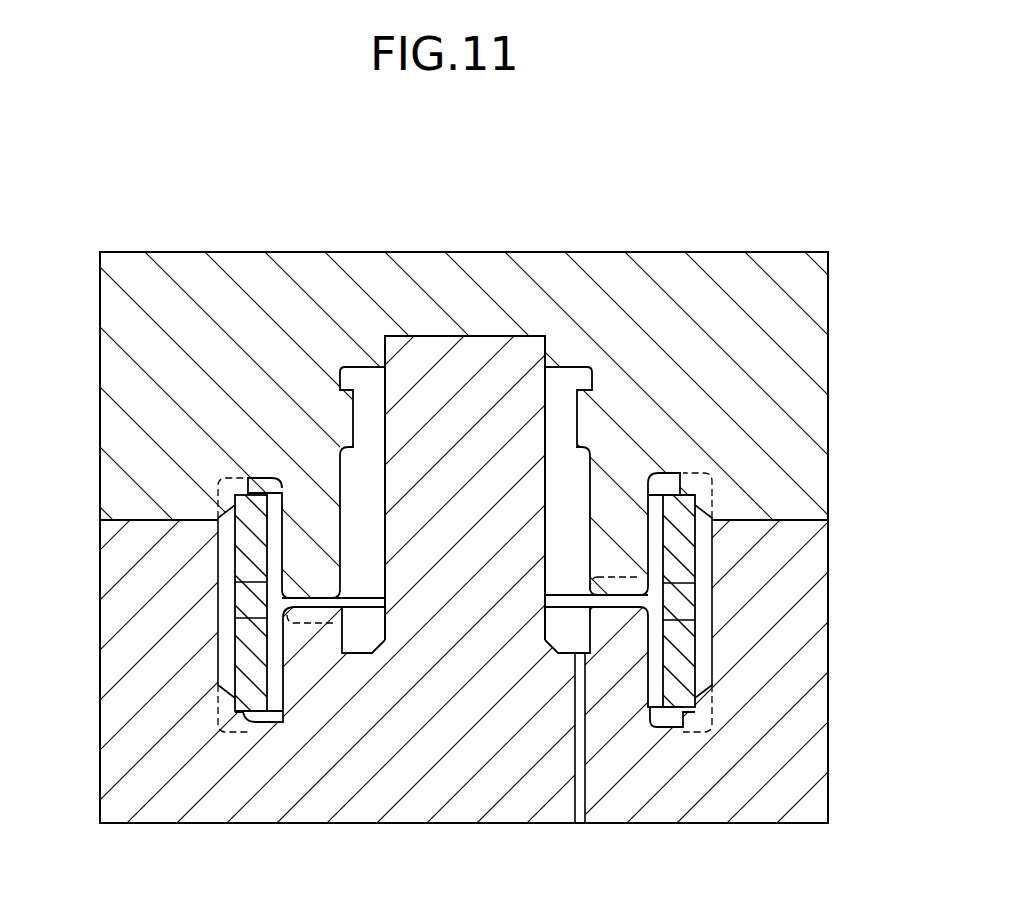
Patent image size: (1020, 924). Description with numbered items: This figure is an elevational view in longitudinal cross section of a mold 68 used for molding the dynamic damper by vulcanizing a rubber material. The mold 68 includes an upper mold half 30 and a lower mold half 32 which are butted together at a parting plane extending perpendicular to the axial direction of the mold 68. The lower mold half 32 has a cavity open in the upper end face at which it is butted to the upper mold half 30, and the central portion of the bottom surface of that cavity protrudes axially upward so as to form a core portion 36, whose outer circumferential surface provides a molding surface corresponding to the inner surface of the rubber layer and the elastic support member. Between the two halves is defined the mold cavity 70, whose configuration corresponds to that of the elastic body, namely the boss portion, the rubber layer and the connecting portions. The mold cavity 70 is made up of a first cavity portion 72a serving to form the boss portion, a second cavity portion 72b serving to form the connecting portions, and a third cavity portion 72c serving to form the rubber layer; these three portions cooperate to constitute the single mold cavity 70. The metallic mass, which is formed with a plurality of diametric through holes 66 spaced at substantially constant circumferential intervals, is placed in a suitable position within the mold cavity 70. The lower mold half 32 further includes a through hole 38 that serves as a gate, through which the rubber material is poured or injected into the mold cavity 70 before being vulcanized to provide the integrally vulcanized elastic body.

The mold 68 is at (793, 213).
The upper mold half 30 is at (800, 304).
The lower mold half 32 is at (815, 574).
The core portion 36 is at (473, 356).
The through hole 38 is at (578, 808).
The through holes 66 is at (248, 600).
The mold cavity 70 is at (362, 498).
The first cavity portion 72a is at (577, 478).
The second cavity portion 72b is at (620, 600).
The third cavity portion 72c is at (277, 677).